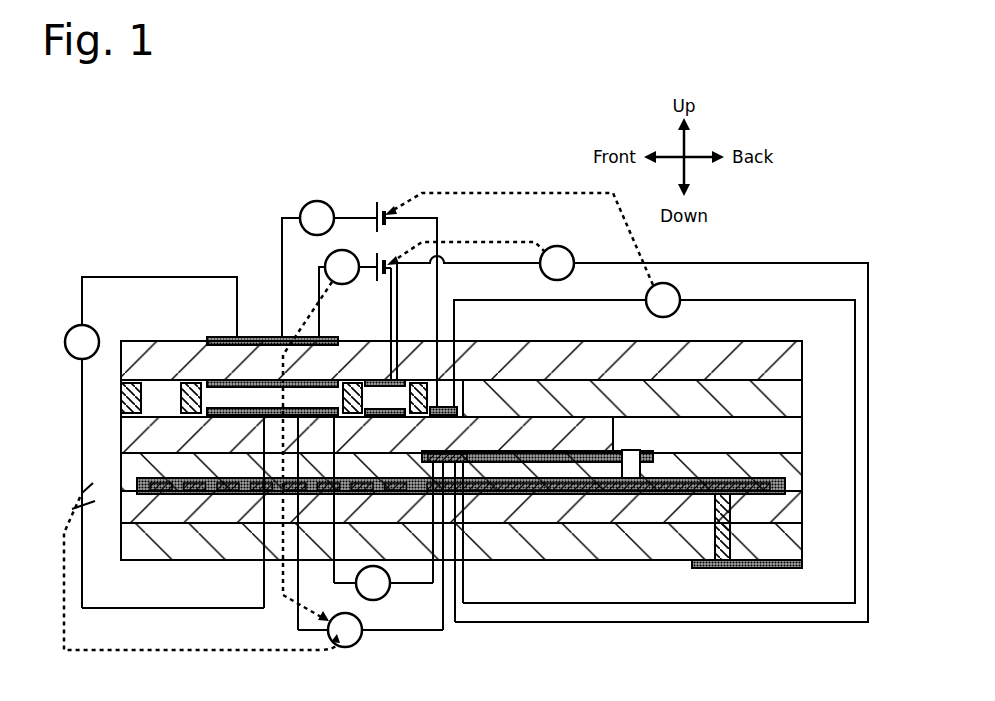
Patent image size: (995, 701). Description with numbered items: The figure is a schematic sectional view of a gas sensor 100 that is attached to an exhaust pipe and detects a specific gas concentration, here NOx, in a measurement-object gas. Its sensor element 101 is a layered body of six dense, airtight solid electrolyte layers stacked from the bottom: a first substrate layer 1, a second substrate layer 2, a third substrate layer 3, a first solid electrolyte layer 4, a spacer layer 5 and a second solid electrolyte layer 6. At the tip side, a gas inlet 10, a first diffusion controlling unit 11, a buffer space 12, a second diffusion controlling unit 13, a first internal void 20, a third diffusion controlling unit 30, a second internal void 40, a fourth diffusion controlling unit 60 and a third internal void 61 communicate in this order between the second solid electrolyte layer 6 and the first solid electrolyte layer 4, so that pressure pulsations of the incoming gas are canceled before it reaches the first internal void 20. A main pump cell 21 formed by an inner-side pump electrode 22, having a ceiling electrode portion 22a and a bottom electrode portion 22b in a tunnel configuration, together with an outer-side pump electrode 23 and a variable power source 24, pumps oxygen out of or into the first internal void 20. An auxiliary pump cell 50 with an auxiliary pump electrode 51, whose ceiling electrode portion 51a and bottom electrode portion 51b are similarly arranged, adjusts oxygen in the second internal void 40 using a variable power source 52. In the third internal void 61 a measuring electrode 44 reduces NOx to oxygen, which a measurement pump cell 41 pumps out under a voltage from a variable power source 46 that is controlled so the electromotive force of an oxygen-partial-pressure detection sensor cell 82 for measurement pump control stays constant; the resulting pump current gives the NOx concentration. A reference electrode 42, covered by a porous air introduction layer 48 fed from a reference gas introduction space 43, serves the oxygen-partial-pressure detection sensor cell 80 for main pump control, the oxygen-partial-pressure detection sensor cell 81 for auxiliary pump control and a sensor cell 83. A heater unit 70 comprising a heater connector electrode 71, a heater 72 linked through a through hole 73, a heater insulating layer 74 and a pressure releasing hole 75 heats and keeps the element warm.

The first substrate layer 1 is at (806, 536).
The second substrate layer 2 is at (806, 509).
The third substrate layer 3 is at (122, 465).
The first solid electrolyte layer 4 is at (122, 432).
The spacer layer 5 is at (806, 382).
The second solid electrolyte layer 6 is at (806, 356).
The gas inlet 10 is at (121, 384).
The first diffusion controlling unit 11 is at (133, 392).
The buffer space 12 is at (152, 396).
The second diffusion controlling unit 13 is at (193, 394).
The first internal void 20 is at (307, 397).
The main pump cell 21 is at (158, 270).
The inner-side pump electrode 22 is at (272, 352).
The ceiling electrode portion 22a is at (290, 380).
The bottom electrode portion 22b is at (255, 408).
The outer-side pump electrode 23 is at (223, 337).
The variable power source 24 is at (73, 504).
The third diffusion controlling unit 30 is at (351, 385).
The second internal void 40 is at (370, 395).
The measurement pump cell 41 is at (303, 203).
The reference electrode 42 is at (460, 452).
The reference gas introduction space 43 is at (800, 440).
The measuring electrode 44 is at (444, 418).
The variable power source 46 is at (382, 206).
The air introduction layer 48 is at (620, 451).
The auxiliary pump cell 50 is at (320, 255).
The auxiliary pump electrode 51 is at (373, 383).
The ceiling electrode portion 51a is at (404, 383).
The bottom electrode portion 51b is at (381, 417).
The variable power source 52 is at (382, 280).
The fourth diffusion controlling unit 60 is at (417, 386).
The third internal void 61 is at (465, 400).
The heater unit 70 is at (530, 494).
The heater connector electrode 71 is at (810, 565).
The heater 72 is at (227, 494).
The through hole 73 is at (733, 560).
The heater insulating layer 74 is at (143, 494).
The pressure releasing hole 75 is at (634, 455).
The oxygen-partial-pressure detection sensor cell for main pump control 80 is at (374, 640).
The oxygen-partial-pressure detection sensor cell for auxiliary pump control 81 is at (717, 258).
The oxygen-partial-pressure detection sensor cell for measurement pump control 82 is at (722, 296).
The sensor cell 83 is at (402, 598).
The gas sensor 100 is at (794, 140).
The sensor element 101 is at (149, 420).